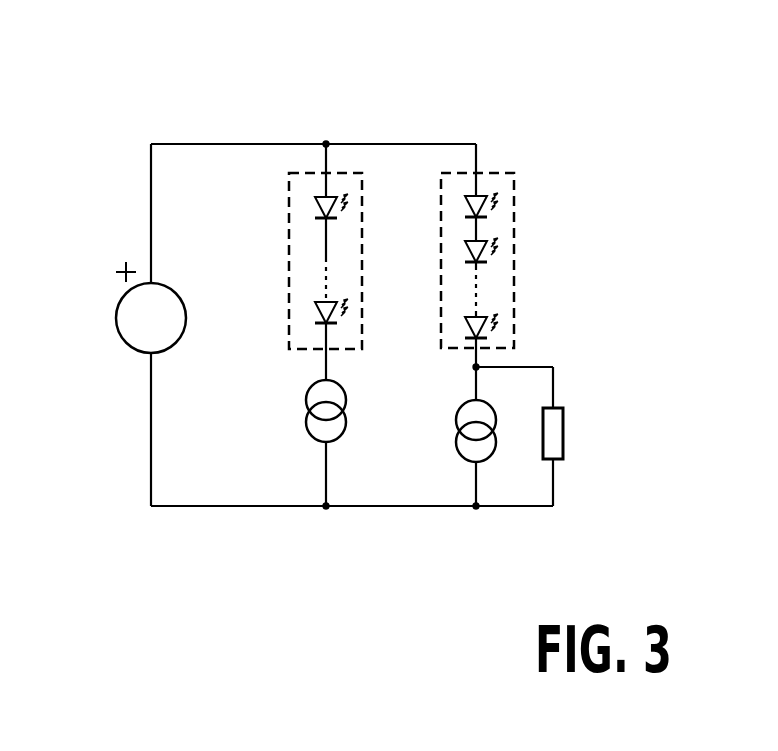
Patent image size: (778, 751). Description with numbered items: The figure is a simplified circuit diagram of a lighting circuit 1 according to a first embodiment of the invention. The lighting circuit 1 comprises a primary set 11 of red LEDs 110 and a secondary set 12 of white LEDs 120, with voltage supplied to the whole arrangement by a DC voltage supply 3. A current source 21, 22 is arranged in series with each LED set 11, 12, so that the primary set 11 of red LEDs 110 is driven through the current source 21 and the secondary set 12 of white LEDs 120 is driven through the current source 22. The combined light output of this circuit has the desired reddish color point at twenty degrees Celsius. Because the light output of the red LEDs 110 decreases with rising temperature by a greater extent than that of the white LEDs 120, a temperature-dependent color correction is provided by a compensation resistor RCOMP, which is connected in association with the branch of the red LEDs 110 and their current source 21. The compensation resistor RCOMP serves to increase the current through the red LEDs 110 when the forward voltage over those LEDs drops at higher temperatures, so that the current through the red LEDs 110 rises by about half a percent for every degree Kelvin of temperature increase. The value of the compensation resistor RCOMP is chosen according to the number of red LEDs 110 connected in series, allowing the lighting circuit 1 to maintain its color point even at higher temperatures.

The lighting circuit 1 is at (592, 124).
The DC voltage supply 3 is at (117, 320).
The primary set of red LEDs 11 is at (457, 247).
The secondary set of white LEDs 12 is at (297, 237).
The red LED 110 is at (470, 251).
The white LED 120 is at (315, 208).
The current source 21 is at (457, 448).
The current source 22 is at (307, 435).
The compensation resistor RCOMP is at (564, 433).